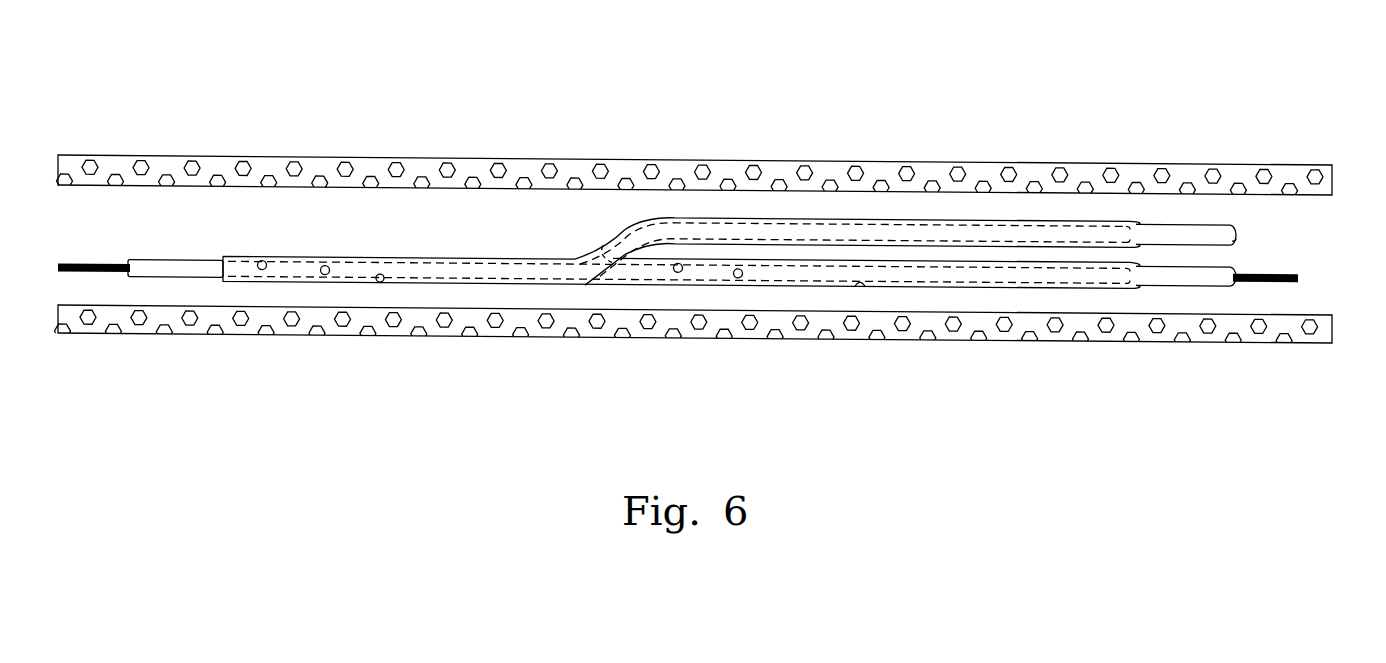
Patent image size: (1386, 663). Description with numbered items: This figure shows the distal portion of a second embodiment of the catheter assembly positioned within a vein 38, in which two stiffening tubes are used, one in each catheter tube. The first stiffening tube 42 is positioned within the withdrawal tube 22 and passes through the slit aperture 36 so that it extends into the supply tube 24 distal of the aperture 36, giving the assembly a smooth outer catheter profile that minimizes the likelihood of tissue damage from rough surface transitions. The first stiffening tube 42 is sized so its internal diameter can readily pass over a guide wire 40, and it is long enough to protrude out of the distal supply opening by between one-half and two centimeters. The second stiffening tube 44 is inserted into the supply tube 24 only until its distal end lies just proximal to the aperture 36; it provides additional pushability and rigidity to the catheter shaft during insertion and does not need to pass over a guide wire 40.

The withdrawal tube 22 is at (869, 292).
The supply tube 24 is at (968, 222).
The slit aperture 36 is at (601, 287).
The vein 38 is at (1085, 162).
The guide wire 40 is at (107, 282).
The first stiffening tube 42 is at (145, 249).
The second stiffening tube 44 is at (1203, 212).